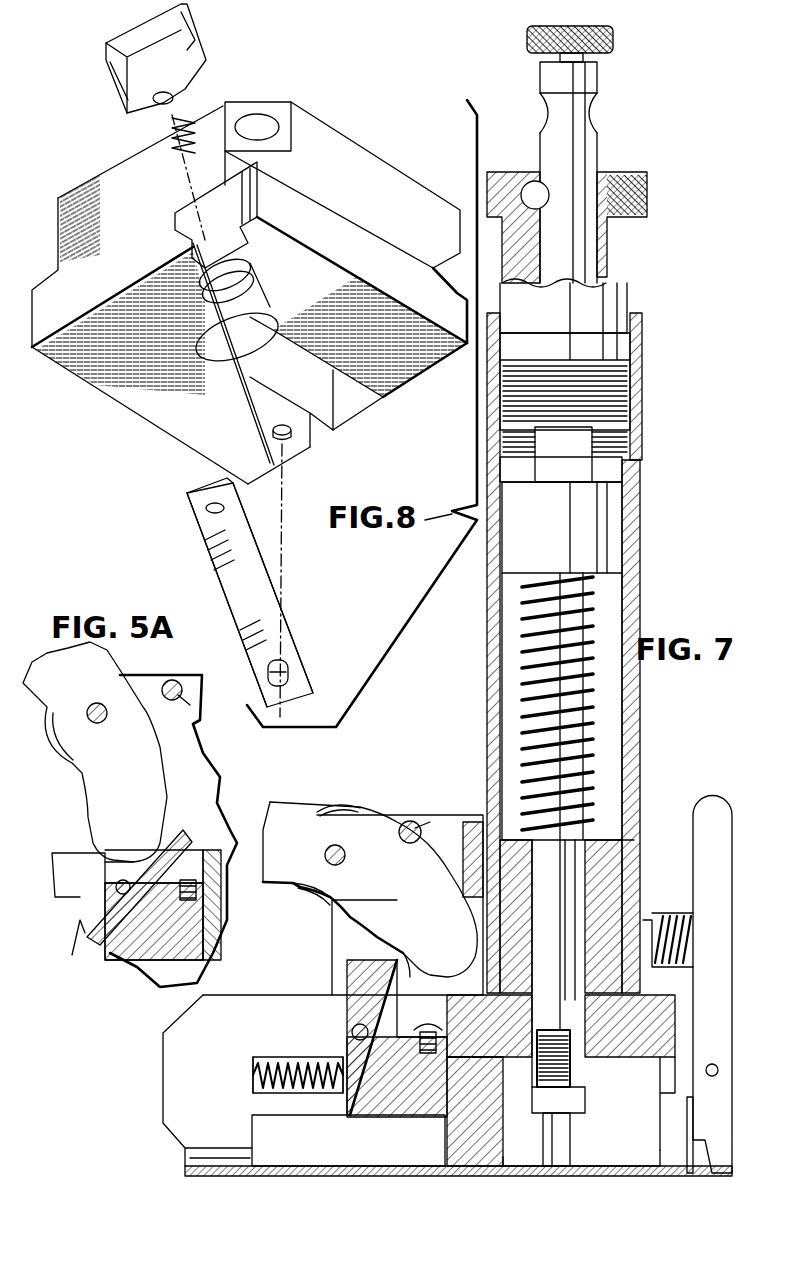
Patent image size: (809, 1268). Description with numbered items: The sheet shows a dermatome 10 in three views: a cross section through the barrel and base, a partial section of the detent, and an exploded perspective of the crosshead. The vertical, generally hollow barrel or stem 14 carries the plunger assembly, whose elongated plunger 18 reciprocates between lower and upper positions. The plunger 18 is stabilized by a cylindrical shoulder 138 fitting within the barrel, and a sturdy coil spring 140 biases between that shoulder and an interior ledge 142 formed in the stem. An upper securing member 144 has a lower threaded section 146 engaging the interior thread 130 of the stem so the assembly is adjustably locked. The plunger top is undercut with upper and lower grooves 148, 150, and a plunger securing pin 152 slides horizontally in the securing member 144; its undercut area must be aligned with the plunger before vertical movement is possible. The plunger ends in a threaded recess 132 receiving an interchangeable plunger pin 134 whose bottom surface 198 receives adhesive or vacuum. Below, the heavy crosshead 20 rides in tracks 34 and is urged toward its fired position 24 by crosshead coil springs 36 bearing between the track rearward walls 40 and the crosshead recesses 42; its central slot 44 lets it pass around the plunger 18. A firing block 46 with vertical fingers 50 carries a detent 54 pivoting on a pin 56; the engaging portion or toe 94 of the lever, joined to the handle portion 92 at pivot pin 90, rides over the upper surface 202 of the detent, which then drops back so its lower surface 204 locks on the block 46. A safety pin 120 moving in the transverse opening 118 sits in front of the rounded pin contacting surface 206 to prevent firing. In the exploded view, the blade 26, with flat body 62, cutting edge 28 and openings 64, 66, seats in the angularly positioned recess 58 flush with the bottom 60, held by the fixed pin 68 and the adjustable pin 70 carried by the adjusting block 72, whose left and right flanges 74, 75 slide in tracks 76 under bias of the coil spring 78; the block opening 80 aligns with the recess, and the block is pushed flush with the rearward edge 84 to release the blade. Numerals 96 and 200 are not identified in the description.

In FIG. 7, the dermatome 10 is at (641, 721).
In FIG. 7, the barrel or stem 14 is at (634, 588).
In FIG. 7, the plunger 18 is at (578, 870).
In FIG. 8, the crosshead 20 is at (103, 398).
In FIG. 7, the final or fired position 24 is at (673, 1138).
In FIG. 8, the blade 26 is at (230, 590).
In FIG. 7, the blade 26 is at (583, 1166).
In FIG. 8, the cutting edge 28 is at (253, 533).
In FIG. 7, the cutting edge 28 is at (607, 1166).
In FIG. 7, the tracks 34 is at (297, 1057).
In FIG. 7, the crosshead coil spring 36 is at (280, 1057).
In FIG. 7, the track rearward wall 40 is at (258, 1057).
In FIG. 8, the crosshead recess 42 is at (258, 122).
In FIG. 8, the central slot 44 is at (335, 405).
In FIG. 5A, the firing block 46 is at (160, 990).
In FIG. 7, the firing block 46 is at (390, 1095).
In FIG. 5A, the vertical finger 50 is at (110, 862).
In FIG. 7, the vertical finger 50 is at (373, 953).
In FIG. 5A, the detent 54 is at (90, 900).
In FIG. 7, the detent 54 is at (345, 1043).
In FIG. 5A, the pin 56 is at (105, 950).
In FIG. 7, the pin 56 is at (410, 977).
In FIG. 8, the angularly positioned recess 58 is at (262, 405).
In FIG. 8, the bottom 60 is at (72, 355).
In FIG. 8, the flat body 62 is at (290, 630).
In FIG. 8, the opening 64 is at (210, 510).
In FIG. 8, the elongated opening 66 is at (285, 668).
In FIG. 8, the fixed pin 68 is at (290, 445).
In FIG. 8, the adjustable pin 70 is at (155, 100).
In FIG. 8, the adjusting block 72 is at (135, 35).
In FIG. 8, the left flange 74 is at (110, 78).
In FIG. 8, the right flange 75 is at (195, 45).
In FIG. 8, the tracks 76 is at (255, 185).
In FIG. 8, the coil spring 78 is at (170, 145).
In FIG. 8, the block opening 80 is at (215, 278).
In FIG. 8, the rearward edge 84 is at (85, 200).
In FIG. 5A, the pivot pin 90 is at (102, 710).
In FIG. 7, the pivot pin 90 is at (340, 852).
In FIG. 5A, the handle portion 92 is at (90, 660).
In FIG. 7, the handle portion 92 is at (283, 810).
In FIG. 5A, the engaging portion or toe 94 is at (82, 857).
In FIG. 7, the engaging portion or toe 94 is at (430, 945).
In FIG. 7, the stop block 96 is at (470, 860).
In FIG. 5A, the transverse opening 118 is at (183, 700).
In FIG. 7, the transverse opening 118 is at (398, 825).
In FIG. 5A, the safety pin 120 is at (180, 698).
In FIG. 7, the safety pin 120 is at (417, 825).
In FIG. 7, the interior thread 130 is at (613, 447).
In FIG. 7, the threaded recess 132 is at (560, 1055).
In FIG. 7, the plunger pin 134 is at (560, 1125).
In FIG. 7, the cylindrical shoulder 138 is at (600, 527).
In FIG. 7, the coil spring 140 is at (595, 680).
In FIG. 7, the interior ledge 142 is at (630, 815).
In FIG. 7, the securing member 144 is at (627, 267).
In FIG. 7, the lower threaded section 146 is at (603, 377).
In FIG. 7, the upper groove 148 is at (590, 118).
In FIG. 7, the lower groove 150 is at (588, 193).
In FIG. 7, the plunger securing pin 152 is at (532, 192).
In FIG. 7, the bottom surface 198 is at (552, 1166).
In FIG. 7, the knob 200 is at (612, 38).
In FIG. 7, the upper surface 202 is at (355, 1025).
In FIG. 5A, the lower surface 204 is at (150, 960).
In FIG. 7, the lower surface 204 is at (412, 1030).
In FIG. 5A, the rounded pin contacting surface 206 is at (176, 680).
In FIG. 7, the rounded pin contacting surface 206 is at (325, 812).